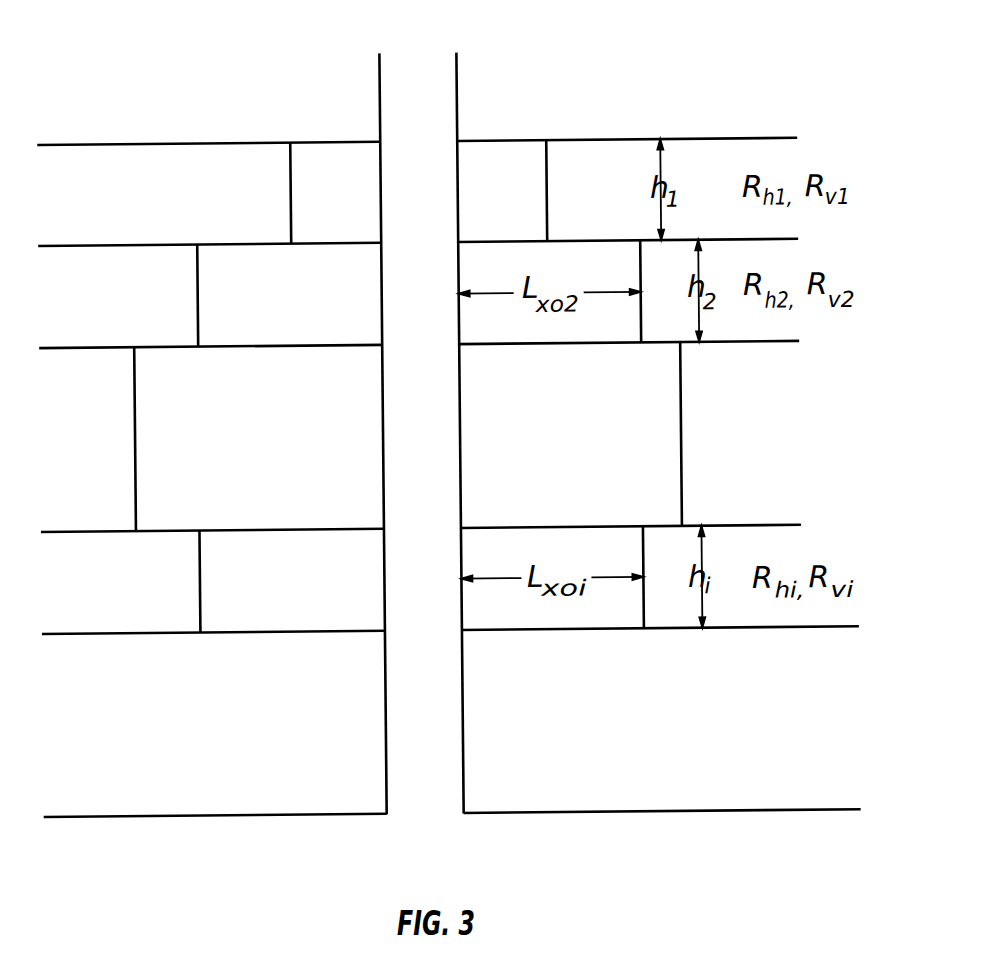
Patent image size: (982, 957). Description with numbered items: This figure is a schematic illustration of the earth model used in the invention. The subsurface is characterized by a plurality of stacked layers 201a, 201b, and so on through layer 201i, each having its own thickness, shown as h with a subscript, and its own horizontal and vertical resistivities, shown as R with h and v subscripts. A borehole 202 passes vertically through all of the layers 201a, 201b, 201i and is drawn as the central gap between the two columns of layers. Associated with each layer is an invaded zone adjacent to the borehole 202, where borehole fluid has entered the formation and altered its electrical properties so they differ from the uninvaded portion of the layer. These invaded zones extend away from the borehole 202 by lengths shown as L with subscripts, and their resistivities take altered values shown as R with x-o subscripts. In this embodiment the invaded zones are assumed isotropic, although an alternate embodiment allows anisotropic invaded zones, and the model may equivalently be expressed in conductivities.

The borehole 202 is at (412, 48).
The layer 201a is at (134, 210).
The layer 201b is at (133, 314).
The layer 201i is at (128, 595).